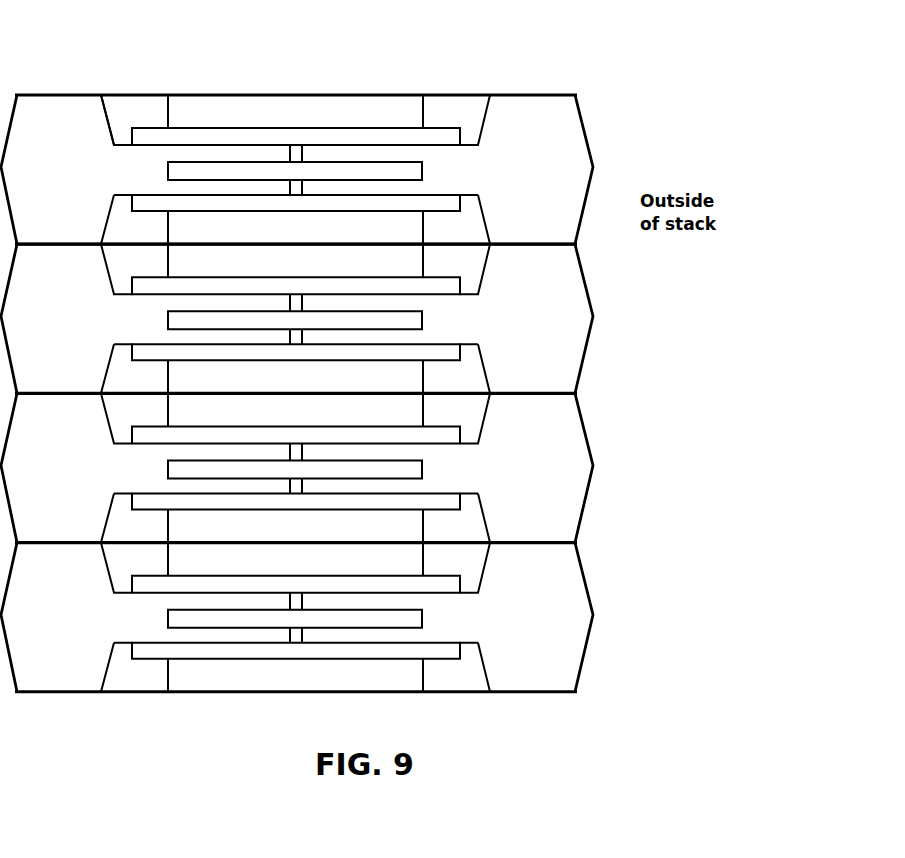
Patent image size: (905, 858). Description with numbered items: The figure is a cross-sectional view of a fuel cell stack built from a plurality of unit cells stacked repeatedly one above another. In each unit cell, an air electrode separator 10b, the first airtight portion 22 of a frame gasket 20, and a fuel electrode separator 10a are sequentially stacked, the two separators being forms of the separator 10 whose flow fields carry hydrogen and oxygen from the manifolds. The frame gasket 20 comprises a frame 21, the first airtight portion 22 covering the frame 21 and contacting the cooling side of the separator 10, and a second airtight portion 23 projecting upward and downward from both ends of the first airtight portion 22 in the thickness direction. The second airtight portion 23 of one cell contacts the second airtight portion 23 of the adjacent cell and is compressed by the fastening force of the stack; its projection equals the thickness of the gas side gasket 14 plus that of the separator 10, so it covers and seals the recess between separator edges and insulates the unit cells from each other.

The separator 10 is at (338, 122).
The fuel electrode separator 10a is at (129, 143).
The air electrode separator 10b is at (153, 140).
The gas side gasket 14 is at (335, 103).
The frame gasket 20 is at (593, 127).
The frame 21 is at (257, 144).
The first airtight portion 22 is at (436, 125).
The second airtight portion 23 is at (538, 94).